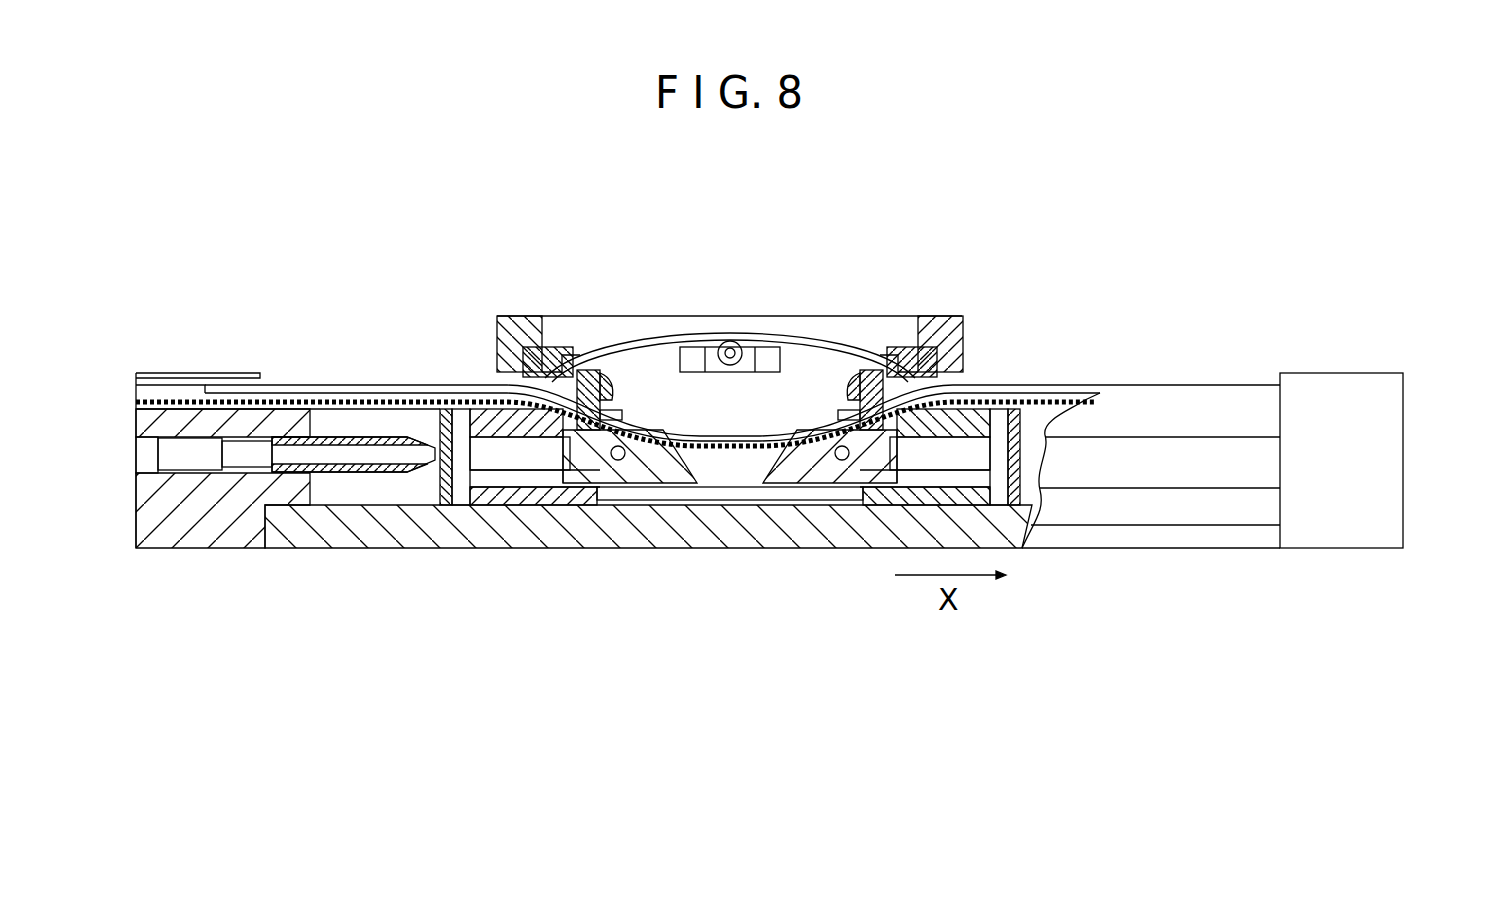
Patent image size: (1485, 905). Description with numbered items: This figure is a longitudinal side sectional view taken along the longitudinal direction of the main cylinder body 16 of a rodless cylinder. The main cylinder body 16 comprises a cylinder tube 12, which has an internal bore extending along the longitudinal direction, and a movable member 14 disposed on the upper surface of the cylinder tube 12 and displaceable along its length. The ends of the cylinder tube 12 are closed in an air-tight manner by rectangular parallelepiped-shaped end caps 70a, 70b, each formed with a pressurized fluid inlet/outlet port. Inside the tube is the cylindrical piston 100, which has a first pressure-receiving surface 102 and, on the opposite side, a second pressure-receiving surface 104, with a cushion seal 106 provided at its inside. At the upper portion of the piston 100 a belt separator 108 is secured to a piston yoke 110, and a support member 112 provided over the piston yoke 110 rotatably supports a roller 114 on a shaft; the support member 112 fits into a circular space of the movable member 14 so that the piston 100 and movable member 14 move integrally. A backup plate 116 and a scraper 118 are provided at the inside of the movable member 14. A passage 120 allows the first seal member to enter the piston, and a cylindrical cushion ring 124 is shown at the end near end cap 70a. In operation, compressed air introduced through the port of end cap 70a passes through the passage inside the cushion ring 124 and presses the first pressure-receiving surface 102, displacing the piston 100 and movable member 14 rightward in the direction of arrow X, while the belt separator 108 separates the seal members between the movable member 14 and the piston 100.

The cylinder tube 12 is at (347, 556).
The movable member 14 is at (808, 308).
The main cylinder body 16 is at (745, 322).
The end cap 70a is at (215, 545).
The end cap 70b is at (1375, 402).
The piston 100 is at (637, 500).
The first pressure-receiving surface 102 is at (428, 545).
The second pressure-receiving surface 104 is at (1035, 485).
The cushion seal 106 is at (448, 400).
The belt separator 108 is at (582, 375).
The piston yoke 110 is at (712, 405).
The support member 112 is at (765, 358).
The roller 114 is at (720, 340).
The backup plate 116 is at (530, 318).
The scraper 118 is at (510, 375).
The passage 120 is at (748, 448).
The cushion ring 124 is at (350, 440).